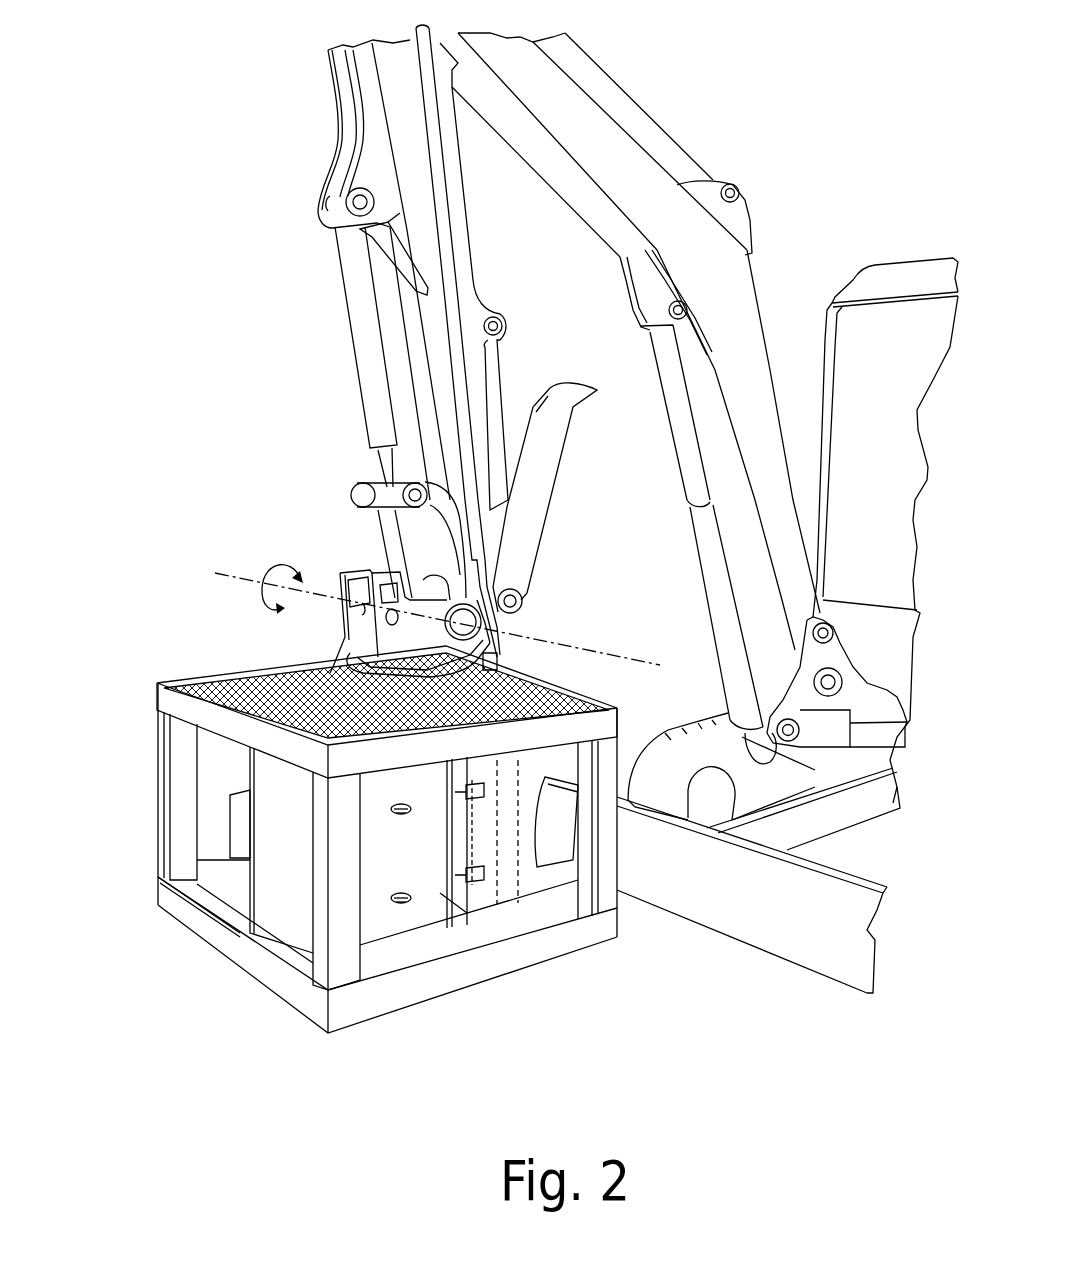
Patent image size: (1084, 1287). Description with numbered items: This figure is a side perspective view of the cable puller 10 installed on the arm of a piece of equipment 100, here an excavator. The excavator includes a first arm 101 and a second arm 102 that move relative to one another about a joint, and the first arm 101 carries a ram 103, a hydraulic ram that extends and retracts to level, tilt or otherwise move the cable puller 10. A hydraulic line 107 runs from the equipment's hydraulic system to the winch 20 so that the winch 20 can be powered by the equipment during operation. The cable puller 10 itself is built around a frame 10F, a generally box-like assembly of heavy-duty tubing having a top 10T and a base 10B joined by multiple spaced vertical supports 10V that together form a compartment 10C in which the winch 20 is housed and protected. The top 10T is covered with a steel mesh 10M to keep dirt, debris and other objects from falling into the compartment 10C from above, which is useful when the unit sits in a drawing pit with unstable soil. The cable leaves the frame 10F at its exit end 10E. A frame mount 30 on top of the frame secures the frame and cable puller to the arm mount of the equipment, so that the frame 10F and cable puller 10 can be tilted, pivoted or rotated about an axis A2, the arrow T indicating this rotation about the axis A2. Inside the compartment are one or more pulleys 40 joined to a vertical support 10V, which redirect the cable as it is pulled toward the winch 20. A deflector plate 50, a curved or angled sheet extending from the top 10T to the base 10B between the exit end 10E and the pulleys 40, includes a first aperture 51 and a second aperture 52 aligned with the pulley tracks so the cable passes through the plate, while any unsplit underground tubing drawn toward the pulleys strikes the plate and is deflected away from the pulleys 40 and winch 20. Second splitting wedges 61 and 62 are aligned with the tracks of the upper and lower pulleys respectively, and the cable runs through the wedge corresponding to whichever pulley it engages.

The cable puller 10 is at (138, 695).
The top 10T is at (255, 670).
The steel mesh 10M is at (233, 690).
The vertical supports 10V is at (167, 767).
The base 10B is at (498, 975).
The exit end 10E is at (157, 882).
The compartment 10C is at (212, 841).
The frame 10F is at (570, 682).
The winch 20 is at (235, 808).
The frame mount 30 is at (338, 645).
The pulleys 40 is at (496, 798).
The deflector plate 50 is at (292, 881).
The first aperture 51 is at (398, 806).
The second aperture 52 is at (398, 895).
The second splitting wedge 61 is at (406, 816).
The second splitting wedge 62 is at (405, 905).
The axis of rotation A2 is at (240, 573).
The rotation direction T is at (282, 577).
The piece of equipment 100 is at (910, 266).
The first arm 101 is at (372, 150).
The second arm 102 is at (646, 176).
The ram 103 is at (357, 300).
The hydraulic line 107 is at (452, 298).